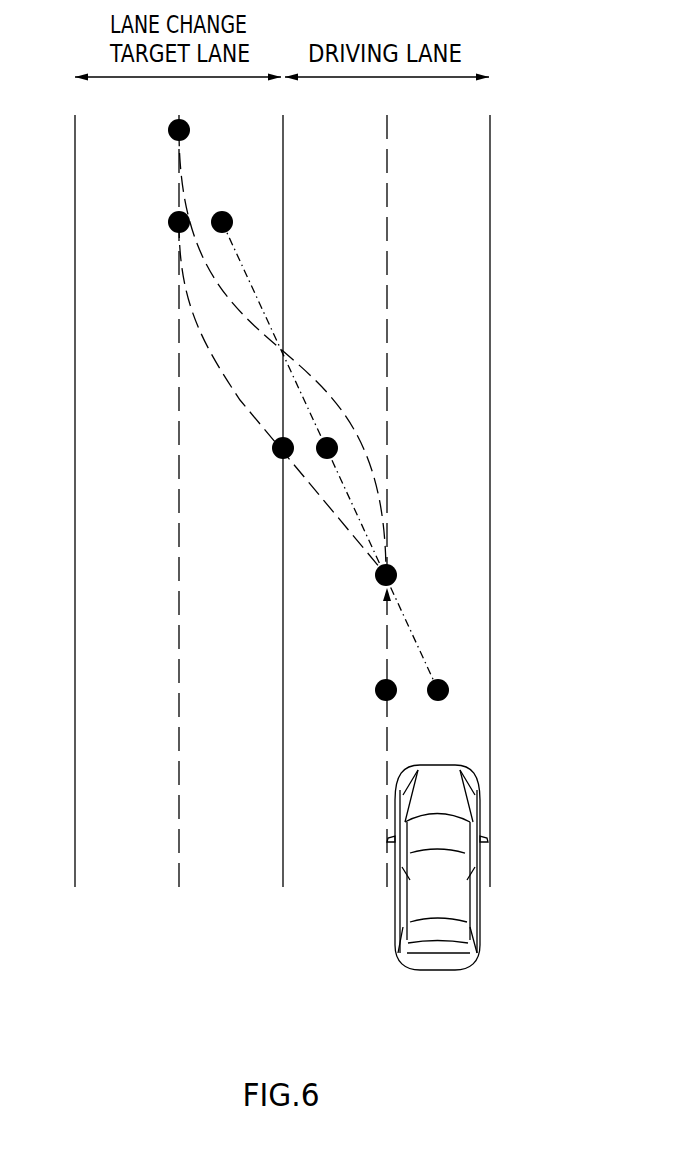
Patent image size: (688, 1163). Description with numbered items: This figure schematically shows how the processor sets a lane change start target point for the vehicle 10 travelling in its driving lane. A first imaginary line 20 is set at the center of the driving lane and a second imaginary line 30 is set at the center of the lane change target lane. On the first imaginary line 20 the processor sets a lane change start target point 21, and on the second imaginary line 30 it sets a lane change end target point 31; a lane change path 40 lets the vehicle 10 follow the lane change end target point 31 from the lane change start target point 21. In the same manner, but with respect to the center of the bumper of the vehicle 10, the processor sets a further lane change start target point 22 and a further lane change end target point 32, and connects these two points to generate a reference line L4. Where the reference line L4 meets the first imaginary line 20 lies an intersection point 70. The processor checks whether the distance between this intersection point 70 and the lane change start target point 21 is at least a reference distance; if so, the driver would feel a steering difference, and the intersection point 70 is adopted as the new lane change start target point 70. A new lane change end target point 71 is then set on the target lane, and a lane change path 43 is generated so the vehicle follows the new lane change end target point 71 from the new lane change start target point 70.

The vehicle 10 is at (437, 972).
The first imaginary line 20 is at (386, 335).
The lane change start target point 21 is at (376, 682).
The lane change start target point 22 is at (440, 680).
The second imaginary line 30 is at (178, 581).
The lane change end target point 31 is at (172, 214).
The lane change end target point 32 is at (225, 211).
The lane change path 40 is at (225, 382).
The lane change path 43 is at (340, 418).
The intersection point / new lane change start target point 70 is at (394, 568).
The new lane change end target point 71 is at (190, 127).
The reference line L4 is at (250, 283).